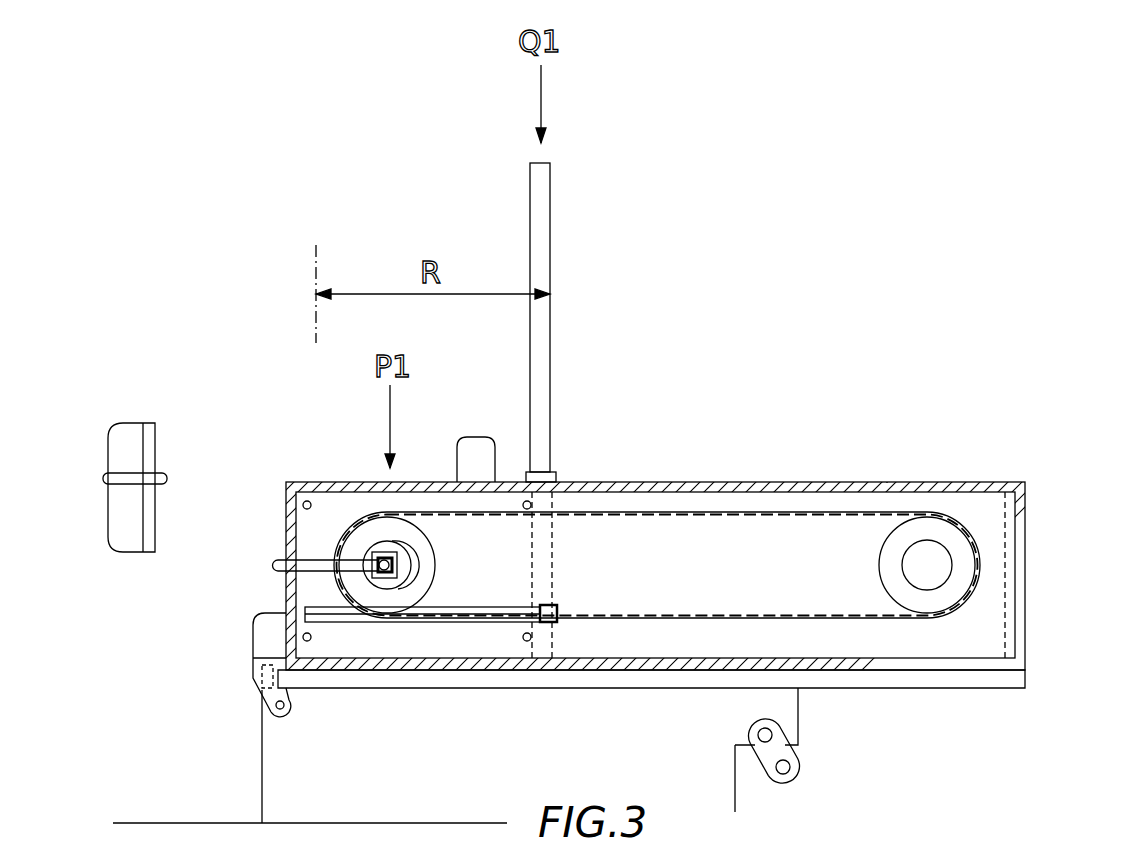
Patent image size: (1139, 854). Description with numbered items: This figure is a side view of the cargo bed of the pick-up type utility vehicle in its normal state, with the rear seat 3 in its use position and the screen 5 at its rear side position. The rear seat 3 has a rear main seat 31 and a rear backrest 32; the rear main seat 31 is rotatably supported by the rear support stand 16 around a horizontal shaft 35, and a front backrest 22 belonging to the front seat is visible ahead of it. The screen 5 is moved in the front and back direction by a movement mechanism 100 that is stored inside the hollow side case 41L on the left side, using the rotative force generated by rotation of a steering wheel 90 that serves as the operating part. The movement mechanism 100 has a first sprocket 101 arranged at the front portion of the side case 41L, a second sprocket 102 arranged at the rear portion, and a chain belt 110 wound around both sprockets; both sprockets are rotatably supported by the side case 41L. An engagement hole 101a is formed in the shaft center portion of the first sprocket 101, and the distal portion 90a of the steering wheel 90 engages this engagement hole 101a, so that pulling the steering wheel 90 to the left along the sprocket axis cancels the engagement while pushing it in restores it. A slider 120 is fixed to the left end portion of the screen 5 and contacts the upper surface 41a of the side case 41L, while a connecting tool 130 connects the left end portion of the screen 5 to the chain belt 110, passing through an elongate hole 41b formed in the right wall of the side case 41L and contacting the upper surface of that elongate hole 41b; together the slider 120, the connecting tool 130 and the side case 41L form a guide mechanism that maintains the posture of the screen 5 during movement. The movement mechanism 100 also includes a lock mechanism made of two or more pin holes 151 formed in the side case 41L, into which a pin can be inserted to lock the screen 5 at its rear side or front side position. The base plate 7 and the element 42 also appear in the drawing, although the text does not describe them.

The rear seat 3 is at (231, 581).
The screen 5 is at (547, 205).
The base plate 7 is at (700, 688).
The rear support stand 16 is at (262, 748).
The front backrest 22 is at (135, 428).
The rear main seat 31 is at (258, 635).
The rear backrest 32 is at (467, 453).
The horizontal shaft 35 is at (270, 708).
The upper surface 41a is at (613, 482).
The elongate hole 41b is at (350, 622).
The side case 41L is at (887, 482).
The cover 42 is at (1005, 512).
The steering wheel 90 is at (303, 557).
The distal portion 90a is at (397, 547).
The movement mechanism 100 is at (765, 406).
The first sprocket 101 is at (375, 530).
The engagement hole 101a is at (402, 578).
The second sprocket 102 is at (880, 563).
The chain belt 110 is at (822, 512).
The slider 120 is at (558, 474).
The connecting tool 130 is at (550, 607).
The pin holes 151 is at (307, 500).